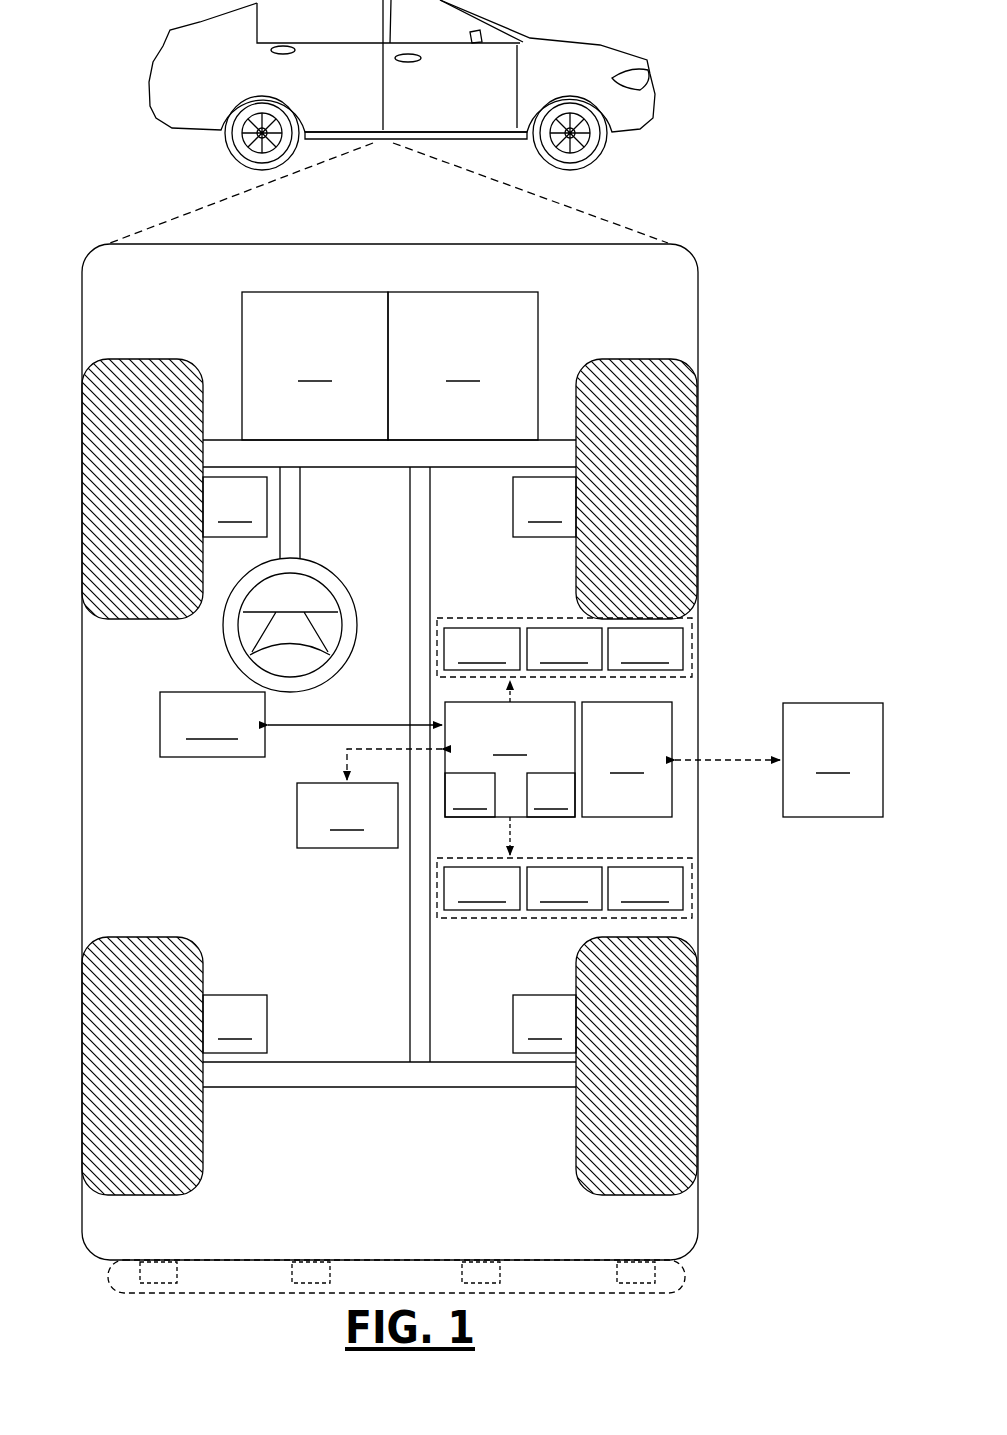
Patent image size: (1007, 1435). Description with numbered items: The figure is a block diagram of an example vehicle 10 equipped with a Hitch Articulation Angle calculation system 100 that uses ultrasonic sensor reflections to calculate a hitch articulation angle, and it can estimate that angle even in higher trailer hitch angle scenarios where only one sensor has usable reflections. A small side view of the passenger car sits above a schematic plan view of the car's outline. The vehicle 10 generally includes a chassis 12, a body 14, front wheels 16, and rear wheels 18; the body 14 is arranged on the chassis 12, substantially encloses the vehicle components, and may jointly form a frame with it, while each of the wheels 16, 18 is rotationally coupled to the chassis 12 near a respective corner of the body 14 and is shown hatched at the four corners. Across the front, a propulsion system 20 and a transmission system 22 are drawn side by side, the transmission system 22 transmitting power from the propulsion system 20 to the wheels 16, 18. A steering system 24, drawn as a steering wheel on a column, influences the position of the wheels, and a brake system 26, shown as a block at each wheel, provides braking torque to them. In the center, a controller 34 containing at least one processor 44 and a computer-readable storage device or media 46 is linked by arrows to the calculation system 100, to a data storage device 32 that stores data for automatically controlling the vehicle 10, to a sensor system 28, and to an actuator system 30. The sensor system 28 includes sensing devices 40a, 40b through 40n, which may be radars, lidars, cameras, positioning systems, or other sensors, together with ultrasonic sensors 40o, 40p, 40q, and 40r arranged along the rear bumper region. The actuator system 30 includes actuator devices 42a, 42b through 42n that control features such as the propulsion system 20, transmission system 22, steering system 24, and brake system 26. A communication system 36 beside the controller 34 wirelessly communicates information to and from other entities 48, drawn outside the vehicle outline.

The vehicle 10 is at (156, 73).
The chassis 12 is at (407, 905).
The body 14 is at (81, 720).
The front wheels 16 is at (143, 358).
The rear wheels 18 is at (146, 1197).
The propulsion system 20 is at (315, 366).
The transmission system 22 is at (463, 366).
The steering system 24 is at (312, 538).
The brake system 26 is at (389, 765).
The sensor system 28 is at (522, 618).
The actuator system 30 is at (528, 920).
The data storage device 32 is at (347, 815).
The controller 34 is at (510, 759).
The communication system 36 is at (627, 759).
The sensing device 40a is at (482, 649).
The sensing device 40b is at (564, 649).
The sensing device 40n is at (645, 649).
The ultrasonic sensor 40o is at (160, 1285).
The ultrasonic sensor 40p is at (310, 1284).
The ultrasonic sensor 40q is at (483, 1284).
The ultrasonic sensor 40r is at (637, 1284).
The actuator device 42a is at (482, 888).
The actuator device 42b is at (564, 888).
The actuator device 42n is at (645, 888).
The processor 44 is at (470, 795).
The computer-readable storage device or media 46 is at (551, 795).
The other entities 48 is at (833, 760).
The Hitch Articulation Angle (HAA) calculation system 100 is at (212, 724).